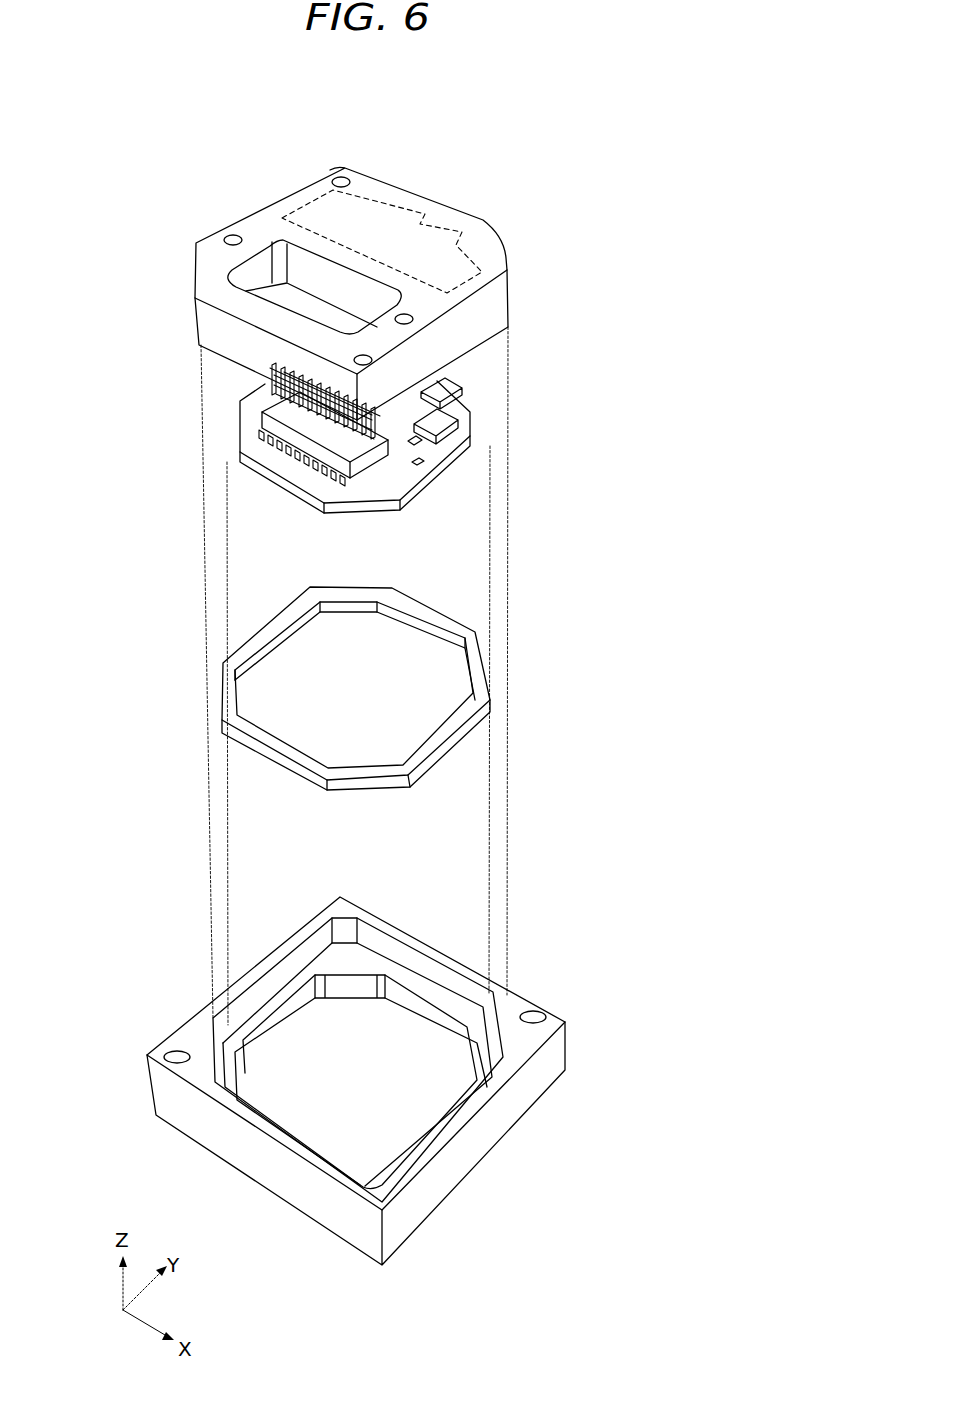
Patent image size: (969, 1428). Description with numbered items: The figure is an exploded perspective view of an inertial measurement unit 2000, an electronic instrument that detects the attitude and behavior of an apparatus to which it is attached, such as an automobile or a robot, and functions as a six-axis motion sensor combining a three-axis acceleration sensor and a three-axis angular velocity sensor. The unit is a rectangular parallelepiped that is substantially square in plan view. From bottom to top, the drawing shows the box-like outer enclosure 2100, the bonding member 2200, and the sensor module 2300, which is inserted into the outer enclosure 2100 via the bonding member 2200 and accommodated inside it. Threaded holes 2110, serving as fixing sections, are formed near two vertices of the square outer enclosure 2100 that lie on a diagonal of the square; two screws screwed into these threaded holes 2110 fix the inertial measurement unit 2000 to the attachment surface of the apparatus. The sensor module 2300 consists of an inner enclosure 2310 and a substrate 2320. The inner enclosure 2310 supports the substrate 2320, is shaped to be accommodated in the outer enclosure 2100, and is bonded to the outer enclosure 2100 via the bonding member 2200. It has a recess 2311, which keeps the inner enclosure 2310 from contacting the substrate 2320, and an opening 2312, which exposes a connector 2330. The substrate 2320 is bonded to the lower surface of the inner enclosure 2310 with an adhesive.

The inertial measurement unit 2000 is at (558, 143).
The outer enclosure 2100 is at (440, 1172).
The threaded holes 2110 is at (173, 1037).
The bonding member 2200 is at (492, 688).
The sensor module 2300 is at (588, 236).
The inner enclosure 2310 is at (487, 248).
The recess 2311 is at (427, 198).
The opening 2312 is at (333, 276).
The substrate 2320 is at (472, 447).
The connector 2330 is at (373, 470).